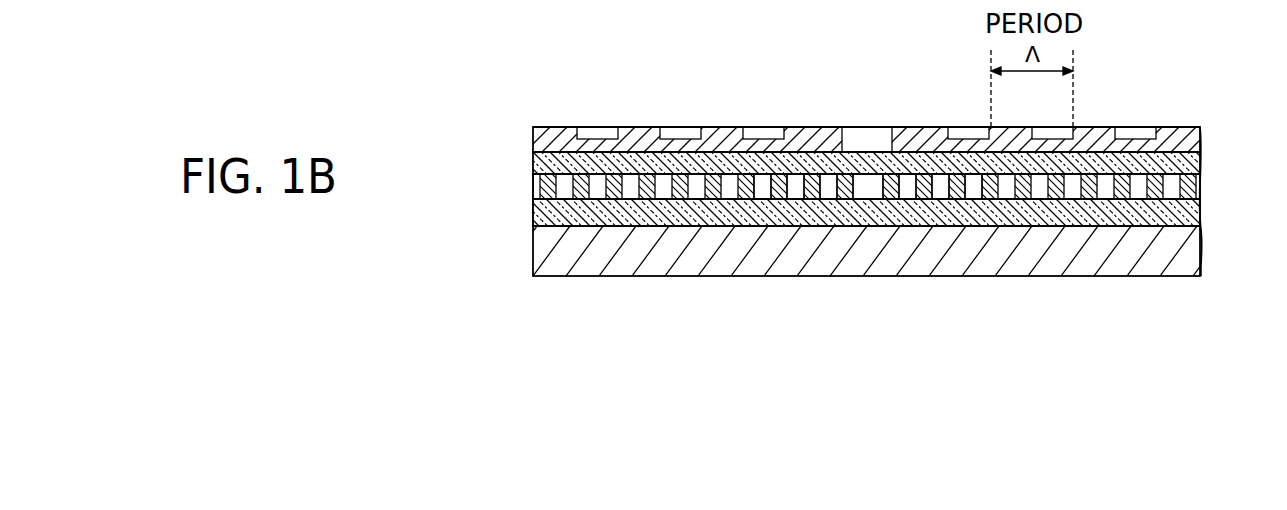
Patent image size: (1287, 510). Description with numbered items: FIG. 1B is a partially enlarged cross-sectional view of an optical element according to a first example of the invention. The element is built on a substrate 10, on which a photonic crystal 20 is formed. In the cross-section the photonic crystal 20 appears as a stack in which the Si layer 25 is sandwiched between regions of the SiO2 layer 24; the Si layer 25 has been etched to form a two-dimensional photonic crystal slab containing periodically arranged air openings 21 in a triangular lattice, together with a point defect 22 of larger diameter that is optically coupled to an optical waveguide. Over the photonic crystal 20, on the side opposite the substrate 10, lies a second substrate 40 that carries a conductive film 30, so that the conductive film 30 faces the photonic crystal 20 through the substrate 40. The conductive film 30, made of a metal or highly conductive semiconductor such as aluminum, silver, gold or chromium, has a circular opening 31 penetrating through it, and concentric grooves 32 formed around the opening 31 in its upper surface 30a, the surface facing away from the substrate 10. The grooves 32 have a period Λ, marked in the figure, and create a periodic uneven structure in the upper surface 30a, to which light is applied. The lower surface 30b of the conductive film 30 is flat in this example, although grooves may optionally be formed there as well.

The substrate 10 is at (534, 243).
The photonic crystal 20 is at (826, 199).
The air openings 21 is at (823, 188).
The point defect 22 is at (868, 185).
The SiO2 layer 24 is at (534, 212).
The Si layer 25 is at (534, 188).
The conductive film 30 is at (876, 105).
The upper surface 30a is at (1180, 127).
The lower surface 30b is at (1200, 160).
The opening 31 is at (873, 127).
The grooves 32 is at (758, 127).
The substrate 40 is at (534, 165).